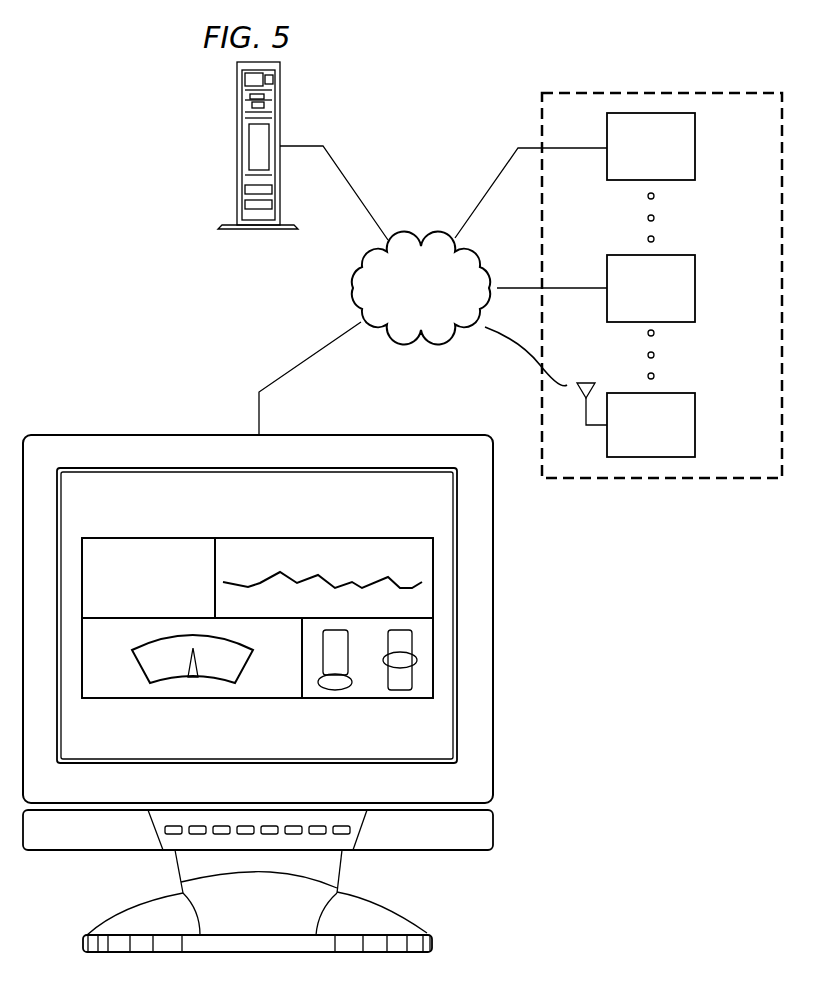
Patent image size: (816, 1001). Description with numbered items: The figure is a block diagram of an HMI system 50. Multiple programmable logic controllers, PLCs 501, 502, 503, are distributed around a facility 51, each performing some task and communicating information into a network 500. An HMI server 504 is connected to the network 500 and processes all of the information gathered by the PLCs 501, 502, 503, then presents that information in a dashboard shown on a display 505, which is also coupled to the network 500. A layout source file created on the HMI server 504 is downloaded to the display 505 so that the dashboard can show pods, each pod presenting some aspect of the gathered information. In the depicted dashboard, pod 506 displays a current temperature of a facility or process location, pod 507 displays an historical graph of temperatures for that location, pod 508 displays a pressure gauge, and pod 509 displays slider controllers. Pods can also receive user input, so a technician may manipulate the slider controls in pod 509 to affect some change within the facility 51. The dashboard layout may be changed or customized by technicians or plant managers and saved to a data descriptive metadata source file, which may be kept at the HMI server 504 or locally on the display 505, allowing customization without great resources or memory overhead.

The HMI system 50 is at (140, 250).
The facility 51 is at (722, 492).
The network 500 is at (420, 237).
The PLC 501 is at (695, 133).
The PLC 502 is at (695, 275).
The PLC 503 is at (695, 437).
The HMI server 504 is at (237, 125).
The display 505 is at (504, 651).
The pod 506 is at (148, 538).
The pod 507 is at (325, 538).
The pod 508 is at (190, 698).
The pod 509 is at (368, 698).